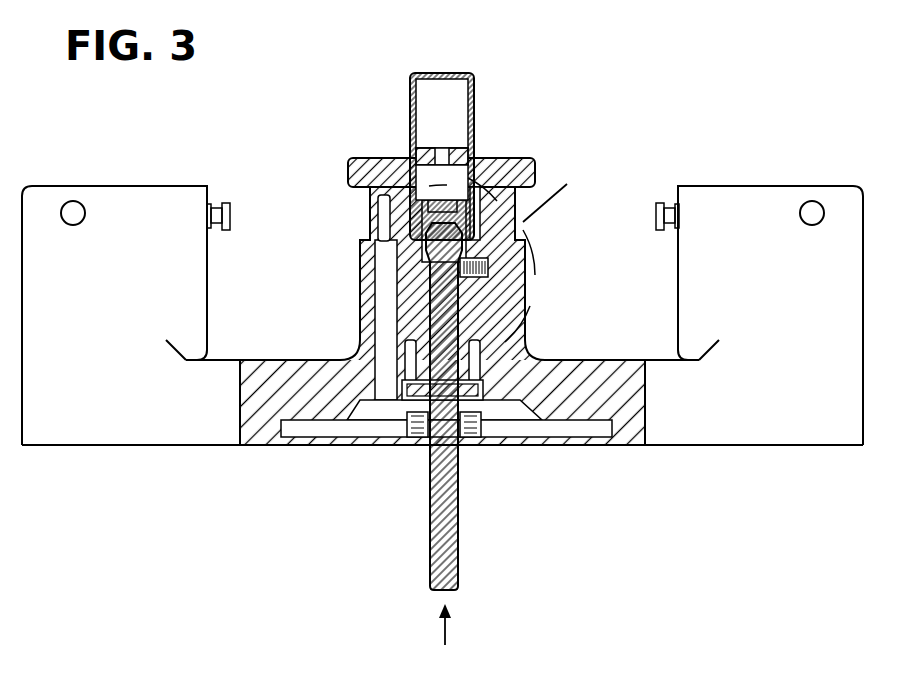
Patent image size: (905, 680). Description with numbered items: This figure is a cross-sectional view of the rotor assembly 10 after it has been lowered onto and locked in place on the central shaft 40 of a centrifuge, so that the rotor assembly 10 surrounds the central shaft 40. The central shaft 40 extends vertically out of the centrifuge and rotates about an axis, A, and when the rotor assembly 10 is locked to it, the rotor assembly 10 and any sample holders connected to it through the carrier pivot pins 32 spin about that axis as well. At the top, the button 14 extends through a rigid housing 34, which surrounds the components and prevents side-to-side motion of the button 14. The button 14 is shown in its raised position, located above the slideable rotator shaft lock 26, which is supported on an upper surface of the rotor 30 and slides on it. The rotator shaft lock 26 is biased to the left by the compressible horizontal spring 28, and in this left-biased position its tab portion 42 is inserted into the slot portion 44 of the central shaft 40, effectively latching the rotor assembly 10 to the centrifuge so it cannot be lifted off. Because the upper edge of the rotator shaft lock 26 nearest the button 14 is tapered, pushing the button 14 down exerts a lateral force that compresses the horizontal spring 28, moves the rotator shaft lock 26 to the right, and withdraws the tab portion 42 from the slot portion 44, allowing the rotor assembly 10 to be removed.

The rotor assembly 10 is at (770, 148).
The button 14 is at (462, 72).
The rotator shaft lock 26 is at (388, 267).
The horizontal spring 28 is at (527, 262).
The rotor 30 is at (150, 186).
The carrier pivot pins 32 is at (73, 201).
The housing 34 is at (522, 158).
The central shaft 40 is at (505, 340).
The tab portion 42 is at (472, 280).
The slot portion 44 is at (412, 400).